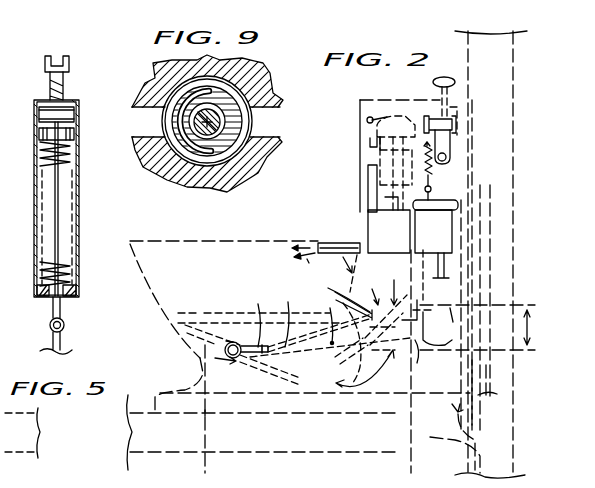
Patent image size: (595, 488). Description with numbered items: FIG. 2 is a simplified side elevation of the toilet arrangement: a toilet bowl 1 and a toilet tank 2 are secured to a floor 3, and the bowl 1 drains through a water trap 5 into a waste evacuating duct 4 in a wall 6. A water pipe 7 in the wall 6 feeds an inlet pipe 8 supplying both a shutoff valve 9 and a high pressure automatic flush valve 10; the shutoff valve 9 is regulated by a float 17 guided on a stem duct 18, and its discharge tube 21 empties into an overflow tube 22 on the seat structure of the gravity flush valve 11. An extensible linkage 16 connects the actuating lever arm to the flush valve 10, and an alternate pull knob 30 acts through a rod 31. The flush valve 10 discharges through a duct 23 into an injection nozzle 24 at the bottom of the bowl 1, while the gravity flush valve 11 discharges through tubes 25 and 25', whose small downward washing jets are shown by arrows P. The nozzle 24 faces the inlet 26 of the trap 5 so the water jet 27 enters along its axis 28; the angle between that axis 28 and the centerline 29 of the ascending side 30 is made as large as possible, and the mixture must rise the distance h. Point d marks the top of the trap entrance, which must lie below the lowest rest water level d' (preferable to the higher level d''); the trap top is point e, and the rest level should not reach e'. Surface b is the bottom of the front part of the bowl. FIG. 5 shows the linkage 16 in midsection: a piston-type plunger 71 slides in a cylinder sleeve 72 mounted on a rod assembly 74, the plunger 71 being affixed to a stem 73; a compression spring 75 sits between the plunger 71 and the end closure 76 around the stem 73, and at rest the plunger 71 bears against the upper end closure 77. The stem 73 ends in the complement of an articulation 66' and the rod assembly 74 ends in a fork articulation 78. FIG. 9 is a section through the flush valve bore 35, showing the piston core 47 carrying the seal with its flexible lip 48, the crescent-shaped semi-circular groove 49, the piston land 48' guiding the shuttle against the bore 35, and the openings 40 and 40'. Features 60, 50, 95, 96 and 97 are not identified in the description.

In FIG. 5, the fork articulation 78 is at (50, 60).
In FIG. 5, the rod assembly 74 is at (66, 90).
In FIG. 5, the upper end closure 77 is at (66, 112).
In FIG. 5, the piston-type plunger 71 is at (62, 136).
In FIG. 5, the compression spring 75 is at (62, 166).
In FIG. 5, the cylinder sleeve 72 is at (33, 222).
In FIG. 5, the extensible linkage 16 is at (78, 238).
In FIG. 2, the extensible linkage 16 is at (430, 186).
In FIG. 5, the stem 73 is at (47, 311).
In FIG. 5, the end closure 76 is at (69, 300).
In FIG. 5, the articulation 66' is at (35, 320).
In FIG. 5, the lower rod 60 is at (62, 342).
In FIG. 9, the hub block 50 is at (245, 186).
In FIG. 9, the opening 40 is at (238, 120).
In FIG. 9, the opening 40' is at (184, 111).
In FIG. 9, the bore 35 is at (222, 82).
In FIG. 9, the semi-circular groove 49 is at (192, 126).
In FIG. 9, the flexible lip 48 is at (171, 148).
In FIG. 9, the piston land 48' is at (249, 144).
In FIG. 9, the core 47 is at (216, 138).
In FIG. 2, the wall 6 is at (494, 126).
In FIG. 2, the water pipe 7 is at (492, 248).
In FIG. 2, the duct 23 is at (446, 270).
In FIG. 2, the toilet tank 2 is at (357, 92).
In FIG. 2, the shutoff valve 9 is at (392, 110).
In FIG. 2, the discharge tube 21 is at (368, 122).
In FIG. 2, the float 17 is at (380, 152).
In FIG. 2, the overflow tube 22 is at (368, 177).
In FIG. 2, the stem duct 18 is at (390, 193).
In FIG. 2, the gravity flush valve 11 is at (397, 244).
In FIG. 2, the high pressure automatic flush valve 10 is at (441, 244).
In FIG. 2, the ascending side of trap 30 is at (444, 76).
In FIG. 2, the rod 31 is at (430, 112).
In FIG. 2, the tube 25 is at (321, 236).
In FIG. 2, the tube 25' is at (307, 266).
In FIG. 2, the washing water jet arrows P is at (343, 273).
In FIG. 2, the toilet bowl 1 is at (210, 231).
In FIG. 2, the floor 3 is at (298, 361).
In FIG. 2, the base line 95 is at (204, 428).
In FIG. 2, the bottom surface of front part of bowl b is at (215, 342).
In FIG. 2, the top of trap entrance d is at (325, 324).
In FIG. 2, the lowest rest water level d' is at (259, 298).
In FIG. 2, the higher rest water level d'' is at (213, 339).
In FIG. 2, the injection nozzle 24 is at (248, 319).
In FIG. 2, the water jet 27 is at (281, 318).
In FIG. 2, the axis 28 is at (339, 337).
In FIG. 2, the trap inlet 26 is at (338, 352).
In FIG. 2, the centerline 29 is at (391, 283).
In FIG. 2, the water trap 5 is at (370, 289).
In FIG. 2, the rest water level at trap top e' is at (422, 300).
In FIG. 2, the top of water trap e is at (438, 311).
In FIG. 2, the inlet pipe 8 is at (413, 362).
In FIG. 2, the distance h is at (481, 327).
In FIG. 2, the elbow pipe 97 is at (458, 412).
In FIG. 2, the pipe inlet 96 is at (458, 414).
In FIG. 2, the waste evacuating duct 4 is at (476, 463).